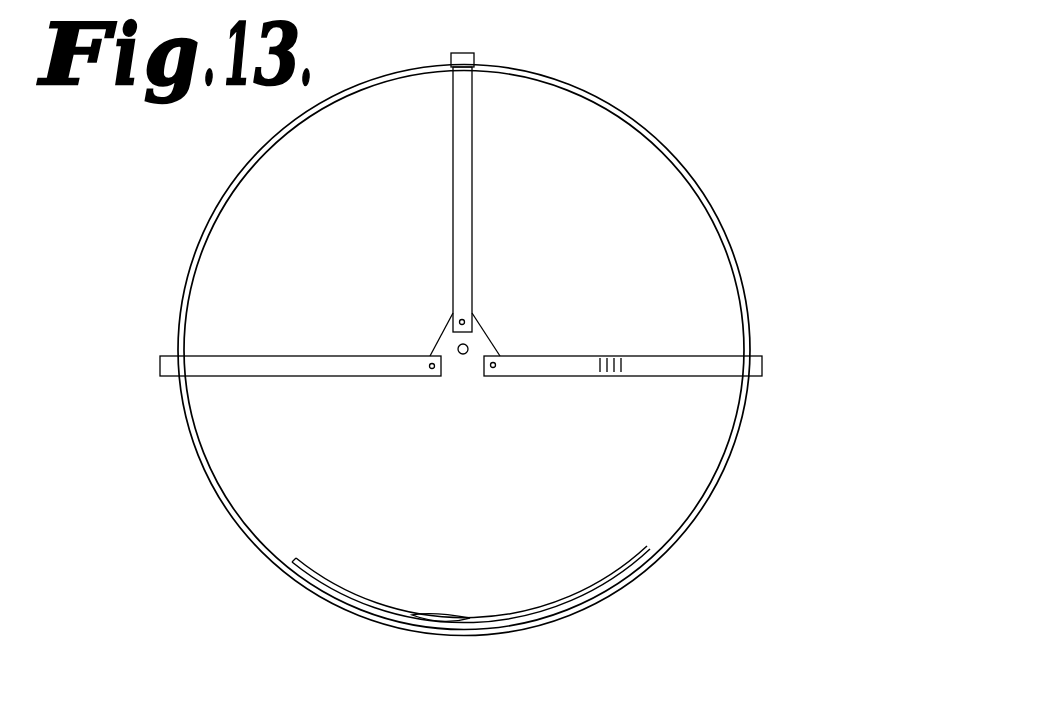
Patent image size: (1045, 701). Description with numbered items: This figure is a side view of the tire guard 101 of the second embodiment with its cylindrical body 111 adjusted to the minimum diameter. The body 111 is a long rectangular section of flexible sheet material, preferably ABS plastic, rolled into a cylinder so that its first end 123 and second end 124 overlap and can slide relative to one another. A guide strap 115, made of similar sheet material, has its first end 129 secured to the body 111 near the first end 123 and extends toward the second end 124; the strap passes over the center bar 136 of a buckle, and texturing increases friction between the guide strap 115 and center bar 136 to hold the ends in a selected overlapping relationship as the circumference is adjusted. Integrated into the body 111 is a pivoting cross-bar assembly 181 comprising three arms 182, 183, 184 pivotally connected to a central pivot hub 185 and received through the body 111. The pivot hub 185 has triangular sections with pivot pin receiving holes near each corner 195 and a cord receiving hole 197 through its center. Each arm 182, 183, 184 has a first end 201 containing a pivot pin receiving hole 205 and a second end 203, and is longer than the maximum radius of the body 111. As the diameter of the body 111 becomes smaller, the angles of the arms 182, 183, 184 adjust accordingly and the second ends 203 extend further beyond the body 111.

The tire guard 101 is at (500, 370).
The cylindrical body 111 is at (737, 430).
The guide strap 115 is at (340, 608).
The first end 123 is at (290, 572).
The second end 124 is at (448, 634).
The first end 129 is at (290, 568).
The center bar 136 is at (660, 560).
The pivoting cross-bar assembly 181 is at (462, 235).
The pivoting cross-bar arm 182 is at (185, 352).
The pivoting cross-bar arm 183 is at (465, 103).
The pivoting cross-bar arm 184 is at (720, 353).
The central pivot hub 185 is at (470, 377).
The corner 195 is at (427, 362).
The cord receiving hole 197 is at (462, 355).
The first end 201 is at (437, 352).
The second end 203 is at (463, 52).
The pivot pin receiving hole 205 is at (495, 362).